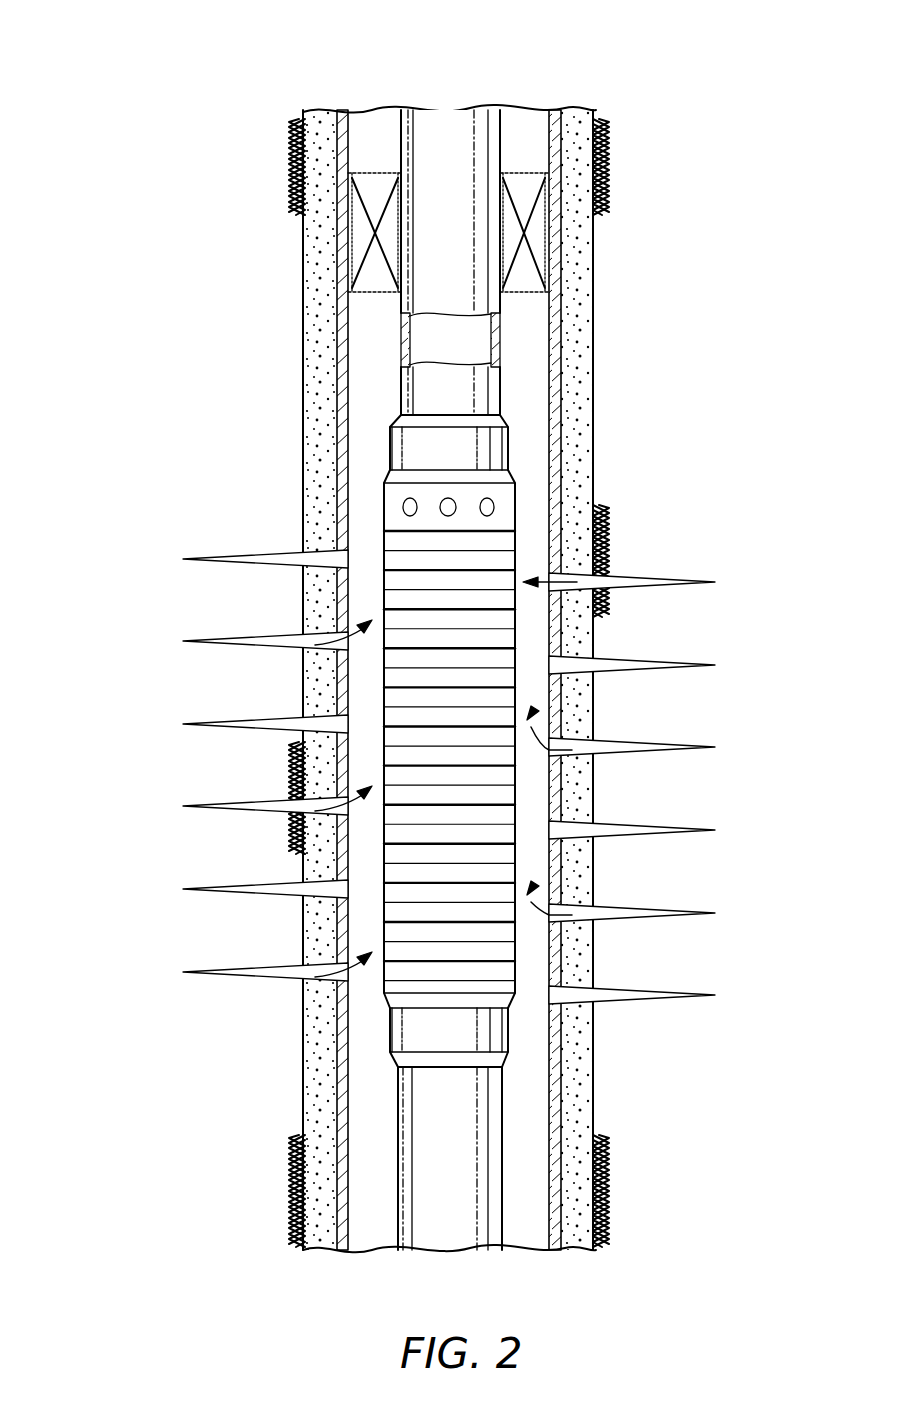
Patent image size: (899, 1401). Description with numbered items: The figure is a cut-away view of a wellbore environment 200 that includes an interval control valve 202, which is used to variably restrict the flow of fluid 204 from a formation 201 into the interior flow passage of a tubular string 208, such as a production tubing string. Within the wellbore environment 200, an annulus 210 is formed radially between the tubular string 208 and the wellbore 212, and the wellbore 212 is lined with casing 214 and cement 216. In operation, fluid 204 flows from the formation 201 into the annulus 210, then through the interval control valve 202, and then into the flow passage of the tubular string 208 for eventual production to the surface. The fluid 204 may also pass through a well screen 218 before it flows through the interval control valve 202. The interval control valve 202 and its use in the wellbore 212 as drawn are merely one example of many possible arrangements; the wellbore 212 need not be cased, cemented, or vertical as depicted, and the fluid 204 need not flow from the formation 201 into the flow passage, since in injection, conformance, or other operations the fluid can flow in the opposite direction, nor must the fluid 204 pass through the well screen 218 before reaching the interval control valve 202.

The wellbore environment 200 is at (478, 36).
The formation 201 is at (138, 787).
The interval control valve 202 is at (332, 741).
The fluid 204 is at (551, 583).
The tubular string 208 is at (507, 1110).
The annulus 210 is at (370, 1093).
The wellbore 212 is at (350, 412).
The casing 214 is at (562, 215).
The cement 216 is at (597, 1048).
The well screen 218 is at (384, 600).